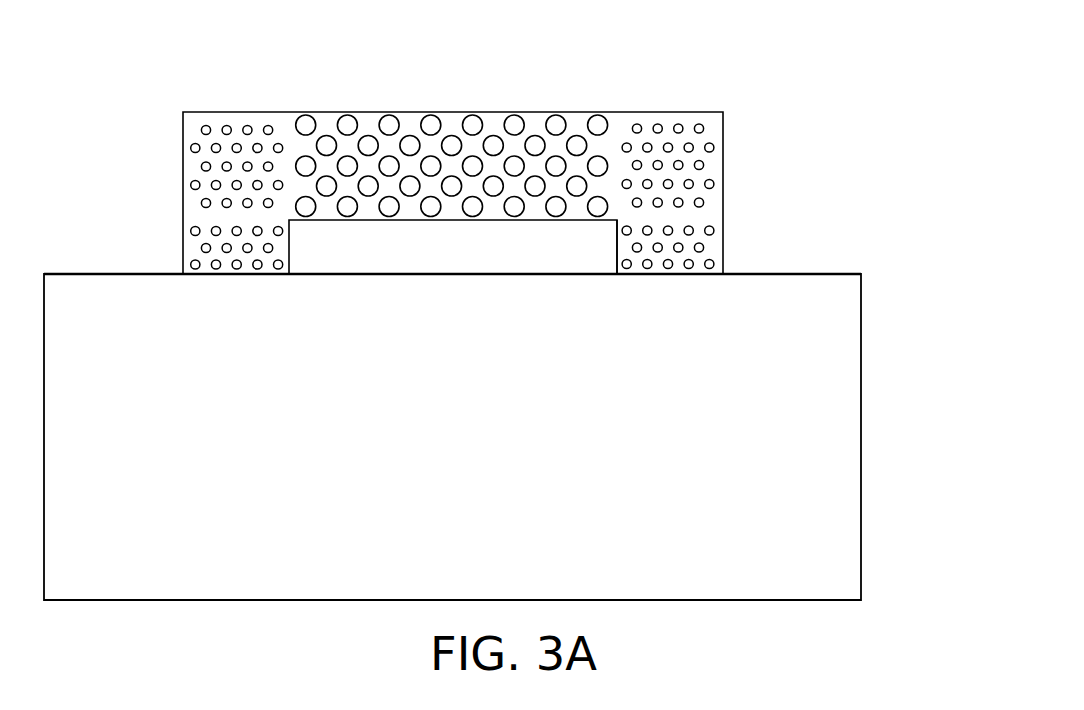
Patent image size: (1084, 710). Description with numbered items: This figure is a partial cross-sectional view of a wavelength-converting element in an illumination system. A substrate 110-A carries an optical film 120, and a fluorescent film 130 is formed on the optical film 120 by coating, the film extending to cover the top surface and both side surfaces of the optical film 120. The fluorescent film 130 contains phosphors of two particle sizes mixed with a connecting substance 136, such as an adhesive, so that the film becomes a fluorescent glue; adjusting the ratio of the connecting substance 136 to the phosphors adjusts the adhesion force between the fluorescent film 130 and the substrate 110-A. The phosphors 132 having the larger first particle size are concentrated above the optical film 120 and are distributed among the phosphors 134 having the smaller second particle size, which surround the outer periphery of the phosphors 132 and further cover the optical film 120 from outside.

The substrate 110-A is at (838, 349).
The optical film 120 is at (531, 242).
The fluorescent film 130 is at (743, 62).
The phosphors having the first particle size 132 is at (598, 123).
The phosphors having the second particle size 134 is at (657, 128).
The connecting substance 136 is at (715, 128).